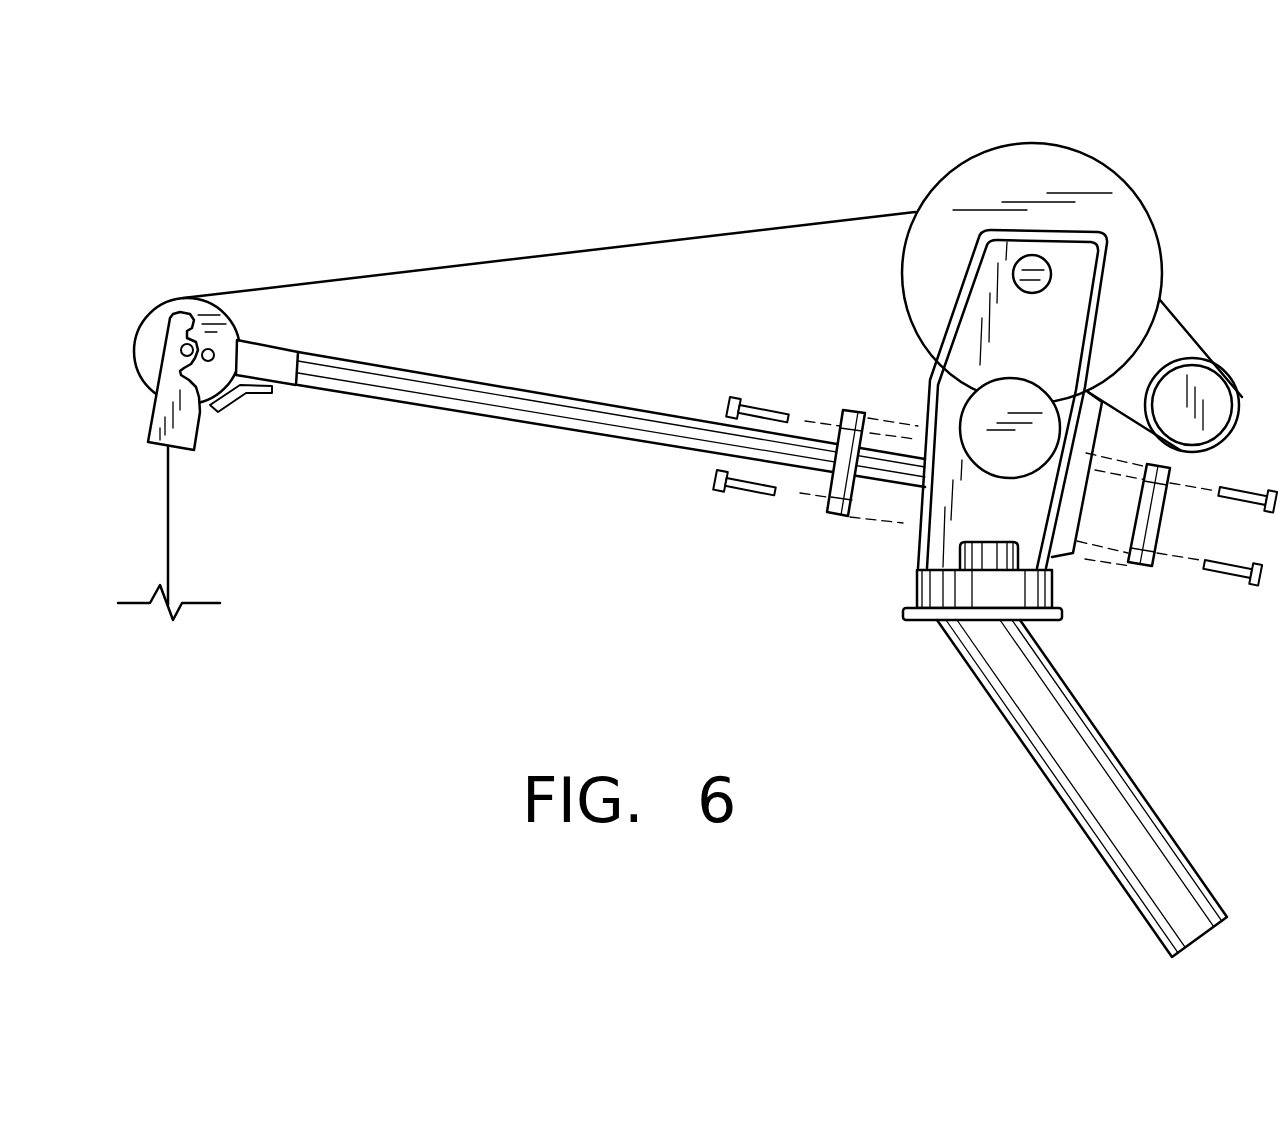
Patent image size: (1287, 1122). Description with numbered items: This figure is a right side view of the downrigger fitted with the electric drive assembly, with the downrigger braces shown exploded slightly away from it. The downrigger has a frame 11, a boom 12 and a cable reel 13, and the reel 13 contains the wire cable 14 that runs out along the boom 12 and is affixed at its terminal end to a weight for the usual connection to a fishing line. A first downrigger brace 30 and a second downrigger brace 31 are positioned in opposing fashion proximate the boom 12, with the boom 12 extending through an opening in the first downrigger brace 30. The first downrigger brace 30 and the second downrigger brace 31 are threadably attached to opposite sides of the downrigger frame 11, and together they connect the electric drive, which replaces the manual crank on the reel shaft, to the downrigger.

The frame 11 is at (920, 378).
The boom 12 is at (562, 397).
The cable reel 13 is at (1052, 180).
The wire cable 14 is at (487, 258).
The first downrigger brace 30 is at (833, 513).
The second downrigger brace 31 is at (1147, 572).